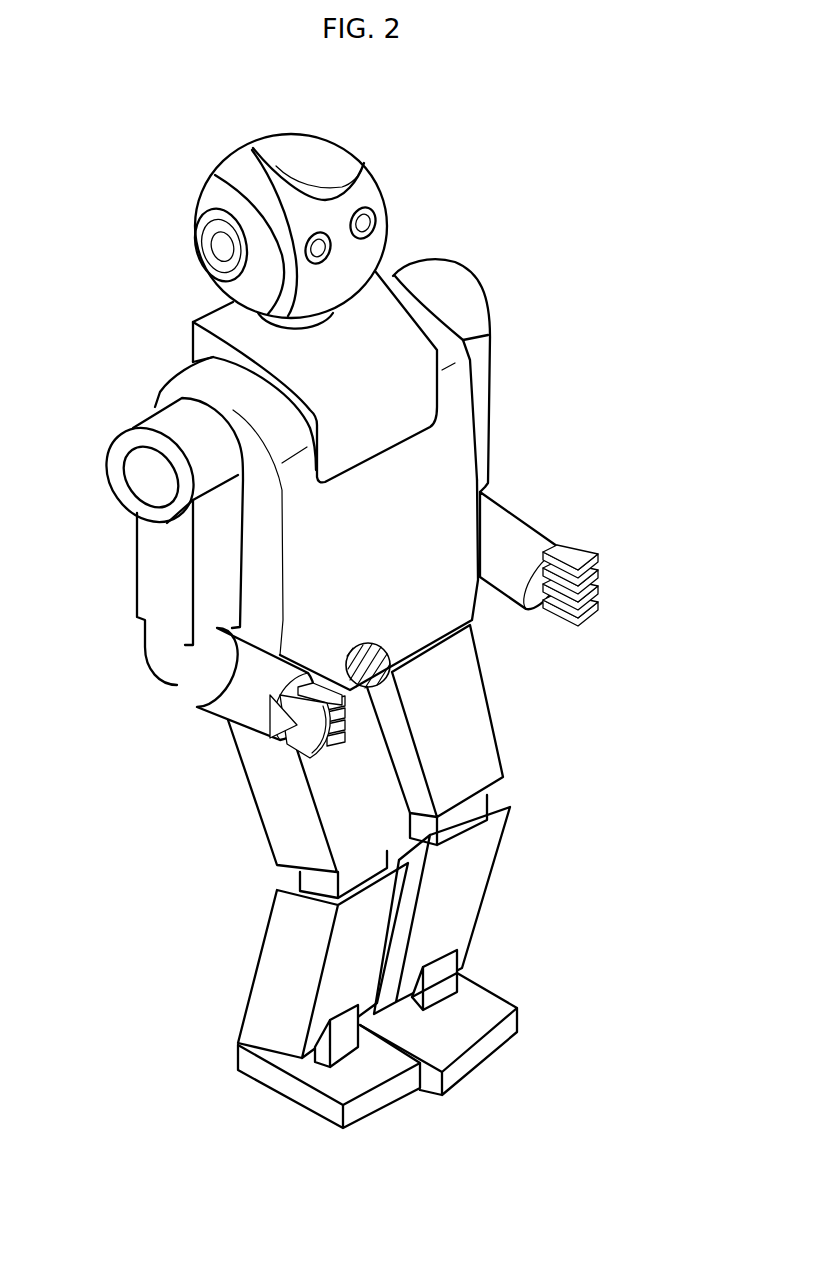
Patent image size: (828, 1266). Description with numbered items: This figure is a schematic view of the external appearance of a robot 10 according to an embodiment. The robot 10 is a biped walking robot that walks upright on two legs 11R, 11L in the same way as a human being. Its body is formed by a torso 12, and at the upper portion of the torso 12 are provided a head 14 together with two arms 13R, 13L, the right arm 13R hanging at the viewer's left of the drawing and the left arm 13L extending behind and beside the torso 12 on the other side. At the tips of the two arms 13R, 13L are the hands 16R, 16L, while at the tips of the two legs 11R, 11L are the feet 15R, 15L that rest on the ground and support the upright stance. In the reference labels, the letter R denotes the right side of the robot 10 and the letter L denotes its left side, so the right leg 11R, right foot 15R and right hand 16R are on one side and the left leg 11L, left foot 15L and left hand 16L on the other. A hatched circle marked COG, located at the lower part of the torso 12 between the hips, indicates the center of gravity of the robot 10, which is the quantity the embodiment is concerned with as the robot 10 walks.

The robot 10 is at (579, 138).
The torso 12 is at (462, 423).
The head 14 is at (386, 214).
The right arm 13R is at (153, 628).
The left arm 13L is at (522, 513).
The right hand 16R is at (296, 742).
The left hand 16L is at (604, 578).
The right leg 11R is at (278, 918).
The left leg 11L is at (490, 862).
The right foot 15R is at (292, 1088).
The left foot 15L is at (514, 1018).
The center of gravity COG is at (380, 664).